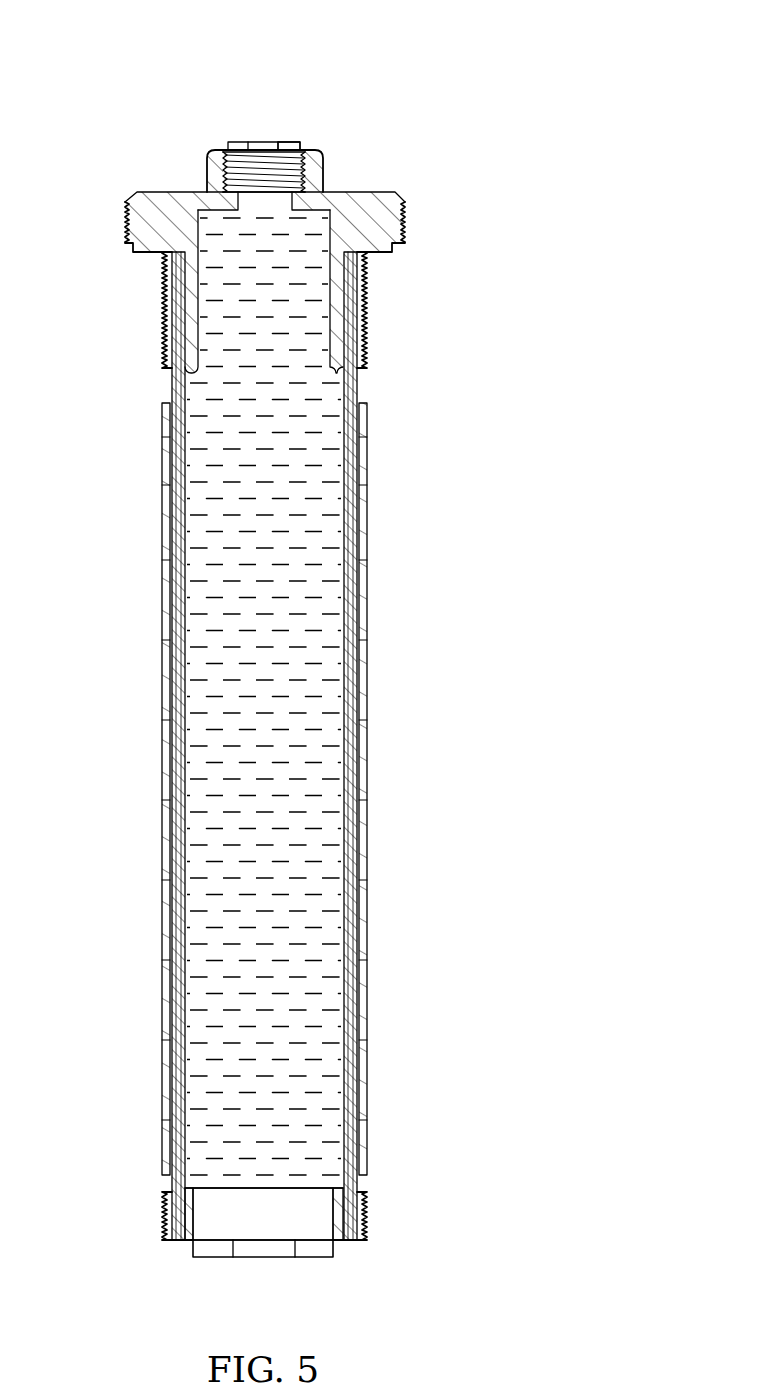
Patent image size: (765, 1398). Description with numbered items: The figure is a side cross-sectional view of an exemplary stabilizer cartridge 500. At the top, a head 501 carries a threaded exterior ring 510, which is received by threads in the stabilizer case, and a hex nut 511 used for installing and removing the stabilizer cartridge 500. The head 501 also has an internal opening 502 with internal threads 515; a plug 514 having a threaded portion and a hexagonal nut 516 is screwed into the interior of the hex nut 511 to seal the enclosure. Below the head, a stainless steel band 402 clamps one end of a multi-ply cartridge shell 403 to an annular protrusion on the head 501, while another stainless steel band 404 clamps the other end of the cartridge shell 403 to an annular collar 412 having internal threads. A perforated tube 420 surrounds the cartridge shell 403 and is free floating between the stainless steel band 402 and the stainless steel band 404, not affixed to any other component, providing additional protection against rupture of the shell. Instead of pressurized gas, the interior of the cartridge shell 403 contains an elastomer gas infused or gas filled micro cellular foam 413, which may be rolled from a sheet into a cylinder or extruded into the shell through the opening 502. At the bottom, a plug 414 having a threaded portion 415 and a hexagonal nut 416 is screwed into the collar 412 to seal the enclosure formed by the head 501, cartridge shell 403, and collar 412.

The stabilizer cartridge 500 is at (356, 72).
The head 501 is at (155, 198).
The opening 502 is at (283, 213).
The threaded exterior ring 510 is at (122, 218).
The hex nut 511 is at (325, 176).
The plug 514 is at (224, 128).
The internal threads 515 is at (293, 143).
The hexagonal nut 516 is at (265, 141).
The stainless steel band 402 is at (163, 300).
The multi-ply cartridge shell 403 is at (180, 708).
The stainless steel band 404 is at (163, 1210).
The annular collar 412 is at (328, 1240).
The elastomer gas infused or gas filled micro cellular foam 413 is at (332, 443).
The plug 414 is at (291, 1266).
The threaded portion 415 is at (218, 1226).
The hexagonal nut 416 is at (265, 1257).
The perforated tube 420 is at (163, 462).